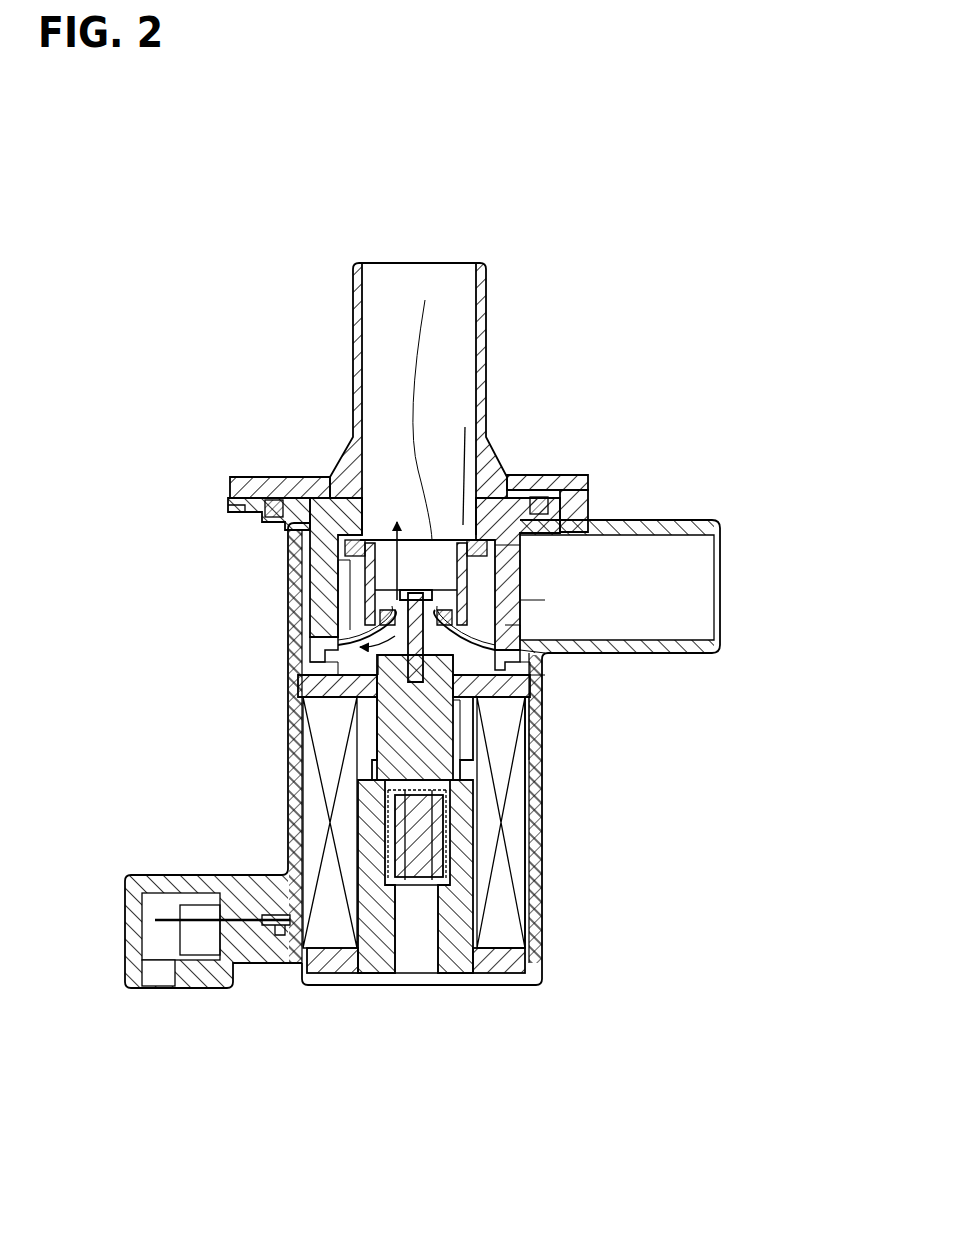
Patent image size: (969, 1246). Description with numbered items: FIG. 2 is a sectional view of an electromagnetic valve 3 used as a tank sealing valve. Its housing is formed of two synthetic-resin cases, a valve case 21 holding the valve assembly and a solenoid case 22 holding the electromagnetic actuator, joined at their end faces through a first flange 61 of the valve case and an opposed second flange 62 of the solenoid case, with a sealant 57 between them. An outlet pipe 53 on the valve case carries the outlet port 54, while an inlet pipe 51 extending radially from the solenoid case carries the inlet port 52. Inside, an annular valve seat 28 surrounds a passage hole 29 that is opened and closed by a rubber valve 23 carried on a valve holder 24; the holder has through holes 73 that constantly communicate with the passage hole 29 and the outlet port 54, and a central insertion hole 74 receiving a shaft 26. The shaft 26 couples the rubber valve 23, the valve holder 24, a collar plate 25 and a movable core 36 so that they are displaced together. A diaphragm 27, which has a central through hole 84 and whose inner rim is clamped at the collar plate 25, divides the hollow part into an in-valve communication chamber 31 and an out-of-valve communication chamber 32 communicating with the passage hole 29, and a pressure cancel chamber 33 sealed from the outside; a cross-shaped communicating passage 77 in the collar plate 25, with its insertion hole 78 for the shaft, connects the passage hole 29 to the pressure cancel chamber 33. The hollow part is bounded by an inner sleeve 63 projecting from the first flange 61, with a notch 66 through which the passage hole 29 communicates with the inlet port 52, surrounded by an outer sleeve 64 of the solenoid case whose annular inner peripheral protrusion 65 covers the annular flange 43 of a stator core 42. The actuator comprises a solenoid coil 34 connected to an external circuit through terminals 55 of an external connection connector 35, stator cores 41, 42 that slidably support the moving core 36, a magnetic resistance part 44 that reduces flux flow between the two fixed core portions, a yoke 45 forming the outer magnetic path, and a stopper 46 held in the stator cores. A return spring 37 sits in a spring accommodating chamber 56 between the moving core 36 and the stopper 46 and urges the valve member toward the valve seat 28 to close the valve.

The electromagnetic valve 3 is at (308, 228).
The valve case 21 is at (513, 478).
The solenoid case 22 is at (537, 830).
The rubber valve 23 is at (320, 563).
The valve holder 24 is at (318, 582).
The collar plate 25 is at (545, 680).
The shaft 26 is at (547, 712).
The diaphragm 27 is at (500, 605).
The annular valve seat 28 is at (518, 557).
The passage hole 29 is at (483, 477).
The in-valve communication chamber 31 is at (448, 540).
The out-of-valve communication chamber 32 is at (305, 620).
The pressure cancel chamber 33 is at (300, 672).
The solenoid coil 34 is at (527, 870).
The external connection connector 35 is at (208, 970).
The movable core 36 is at (530, 755).
The return spring 37 is at (448, 862).
The stator core 41 is at (382, 950).
The stator core 42 is at (330, 745).
The annular flange 43 is at (305, 708).
The magnetic resistance part 44 is at (345, 755).
The yoke 45 is at (332, 960).
The stopper 46 is at (425, 975).
The inlet pipe 51 is at (683, 518).
The inlet port 52 is at (673, 567).
The outlet pipe 53 is at (487, 265).
The outlet port 54 is at (432, 283).
The terminal 55 is at (194, 925).
The spring accommodating chamber 56 is at (390, 822).
The sealant 57 is at (272, 497).
The first flange 61 is at (250, 478).
The second flange 62 is at (230, 503).
The inner sleeve 63 is at (300, 555).
The outer sleeve 64 is at (305, 604).
The inner peripheral protrusion 65 is at (545, 668).
The notch 66 is at (510, 578).
The through holes 73 is at (392, 585).
The insertion hole 74 is at (300, 650).
The communicating passage 77 is at (545, 702).
The insertion hole 78 is at (305, 702).
The through hole 84 is at (443, 575).